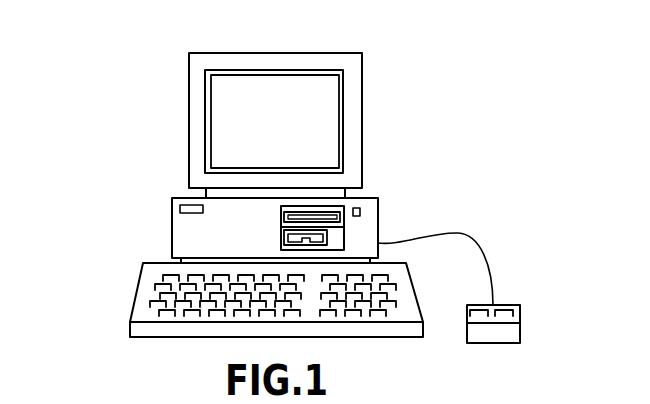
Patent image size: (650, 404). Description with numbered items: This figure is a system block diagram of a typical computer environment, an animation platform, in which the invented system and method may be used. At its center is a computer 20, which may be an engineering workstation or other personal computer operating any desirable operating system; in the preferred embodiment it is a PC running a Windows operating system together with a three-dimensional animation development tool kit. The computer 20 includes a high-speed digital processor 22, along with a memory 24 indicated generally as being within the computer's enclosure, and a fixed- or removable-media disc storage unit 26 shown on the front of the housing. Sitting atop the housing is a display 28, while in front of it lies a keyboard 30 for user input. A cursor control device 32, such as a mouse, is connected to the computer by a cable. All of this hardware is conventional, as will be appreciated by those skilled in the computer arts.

The computer 20 is at (162, 88).
The high-speed digital processor 22 is at (172, 215).
The memory 24 is at (393, 218).
The disc storage unit 26 is at (281, 234).
The display 28 is at (362, 88).
The keyboard 30 is at (140, 278).
The cursor control device 32 is at (520, 320).